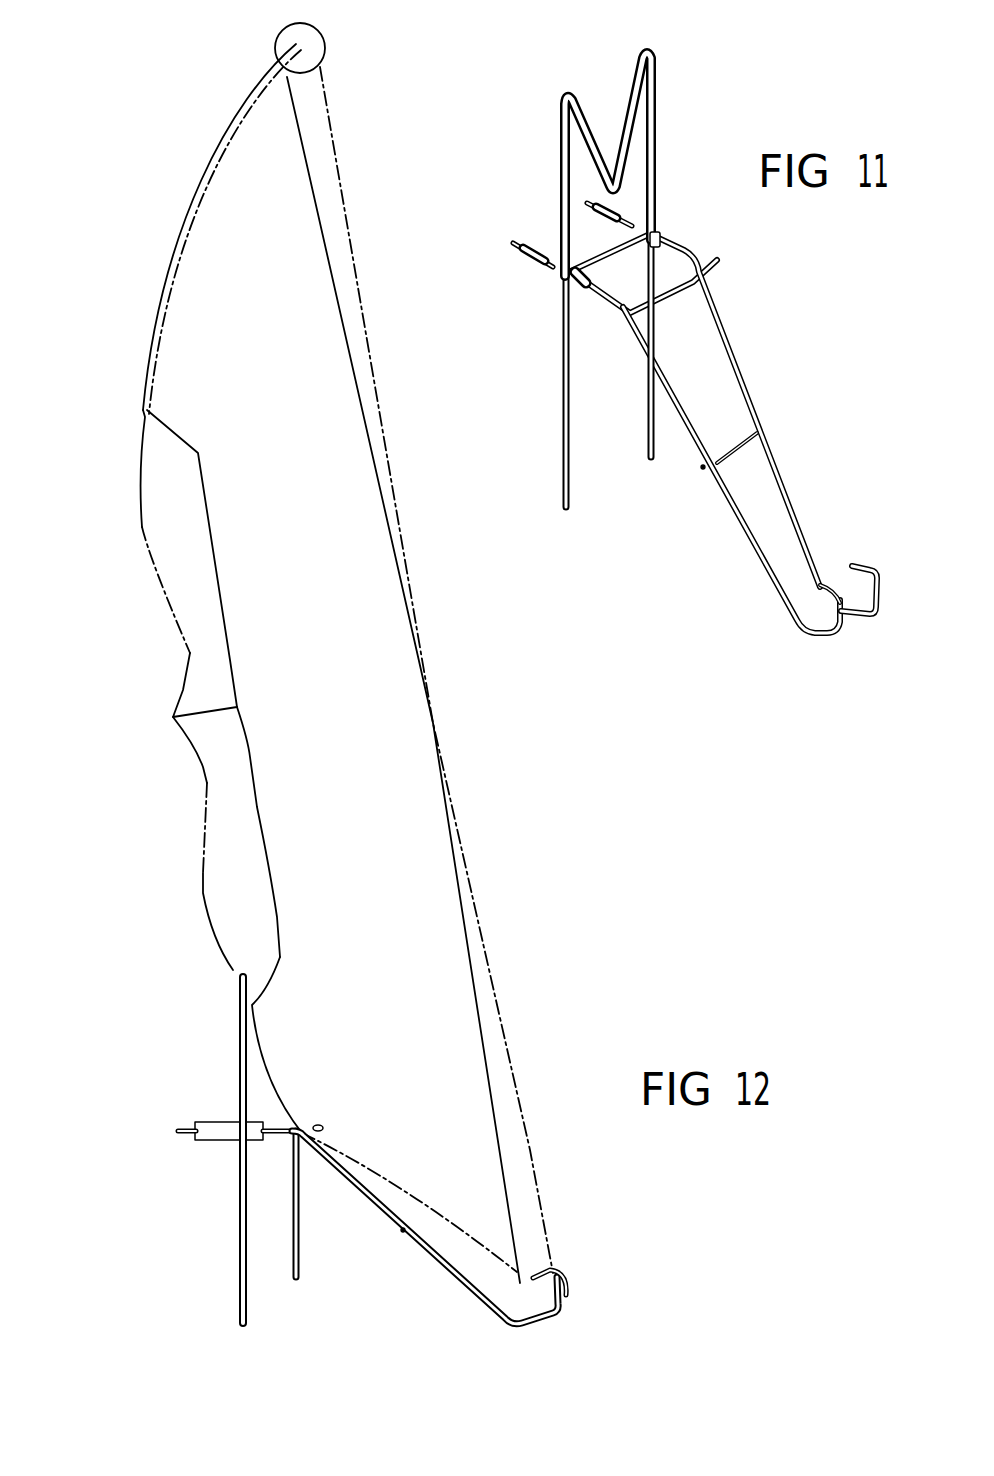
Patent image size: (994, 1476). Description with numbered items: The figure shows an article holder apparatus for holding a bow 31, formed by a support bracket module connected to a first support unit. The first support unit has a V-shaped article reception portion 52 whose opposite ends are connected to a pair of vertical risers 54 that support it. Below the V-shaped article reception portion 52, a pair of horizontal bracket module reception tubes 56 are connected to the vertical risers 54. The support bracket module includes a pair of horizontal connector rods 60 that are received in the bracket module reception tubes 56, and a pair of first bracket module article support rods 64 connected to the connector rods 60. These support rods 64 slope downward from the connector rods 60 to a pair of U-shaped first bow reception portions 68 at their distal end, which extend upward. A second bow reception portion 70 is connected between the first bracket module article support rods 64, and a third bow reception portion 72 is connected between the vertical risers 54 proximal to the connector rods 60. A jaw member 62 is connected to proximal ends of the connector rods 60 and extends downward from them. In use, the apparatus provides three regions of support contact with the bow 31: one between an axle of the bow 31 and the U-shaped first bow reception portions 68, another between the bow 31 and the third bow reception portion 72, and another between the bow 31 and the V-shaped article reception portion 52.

In FIG. 12, the bow 31 is at (460, 778).
In FIG. 11, the V-shaped article reception portion 52 is at (633, 97).
In FIG. 12, the V-shaped article reception portion 52 is at (238, 990).
In FIG. 11, the vertical risers 54 is at (568, 402).
In FIG. 11, the horizontal bracket module reception tubes 56 is at (627, 203).
In FIG. 12, the horizontal bracket module reception tubes 56 is at (217, 1134).
In FIG. 11, the horizontal connector rods 60 is at (680, 247).
In FIG. 12, the horizontal connector rods 60 is at (273, 1134).
In FIG. 12, the jaw member 62 is at (300, 1275).
In FIG. 11, the first bracket module article support rods 64 is at (747, 390).
In FIG. 12, the first bracket module article support rods 64 is at (463, 1284).
In FIG. 11, the U-shaped first bow reception portions 68 is at (847, 610).
In FIG. 12, the U-shaped first bow reception portions 68 is at (567, 1293).
In FIG. 11, the second bow reception portion 70 is at (767, 457).
In FIG. 12, the second bow reception portion 70 is at (403, 1231).
In FIG. 11, the third bow reception portion 72 is at (672, 299).
In FIG. 12, the third bow reception portion 72 is at (320, 1127).